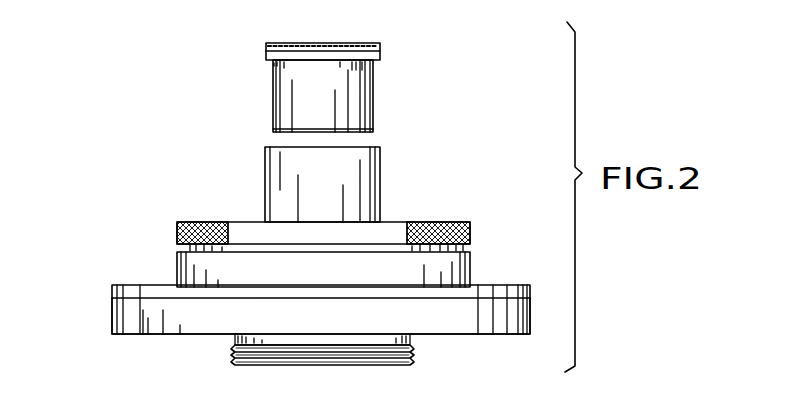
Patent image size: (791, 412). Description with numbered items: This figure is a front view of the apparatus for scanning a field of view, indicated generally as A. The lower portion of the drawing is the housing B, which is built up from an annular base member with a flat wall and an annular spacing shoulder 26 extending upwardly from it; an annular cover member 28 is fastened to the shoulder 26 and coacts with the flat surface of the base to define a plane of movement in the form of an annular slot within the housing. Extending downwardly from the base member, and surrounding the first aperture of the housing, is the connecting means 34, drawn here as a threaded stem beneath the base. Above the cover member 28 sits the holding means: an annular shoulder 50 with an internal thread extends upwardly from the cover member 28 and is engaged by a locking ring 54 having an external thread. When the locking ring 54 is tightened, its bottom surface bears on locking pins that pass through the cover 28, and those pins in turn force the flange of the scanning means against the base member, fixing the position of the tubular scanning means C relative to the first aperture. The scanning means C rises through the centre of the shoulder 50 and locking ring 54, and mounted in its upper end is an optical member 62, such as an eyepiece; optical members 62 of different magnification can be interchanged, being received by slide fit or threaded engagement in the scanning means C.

The optical member 62 is at (277, 82).
The scanning means C is at (380, 172).
The locking ring 54 is at (463, 222).
The annular shoulder 50 is at (470, 260).
The annular cover member 28 is at (133, 292).
The annular spacing shoulder 26 is at (137, 327).
The connecting means 34 is at (233, 350).
The apparatus for scanning a field of view A is at (102, 307).
The housing B is at (533, 308).